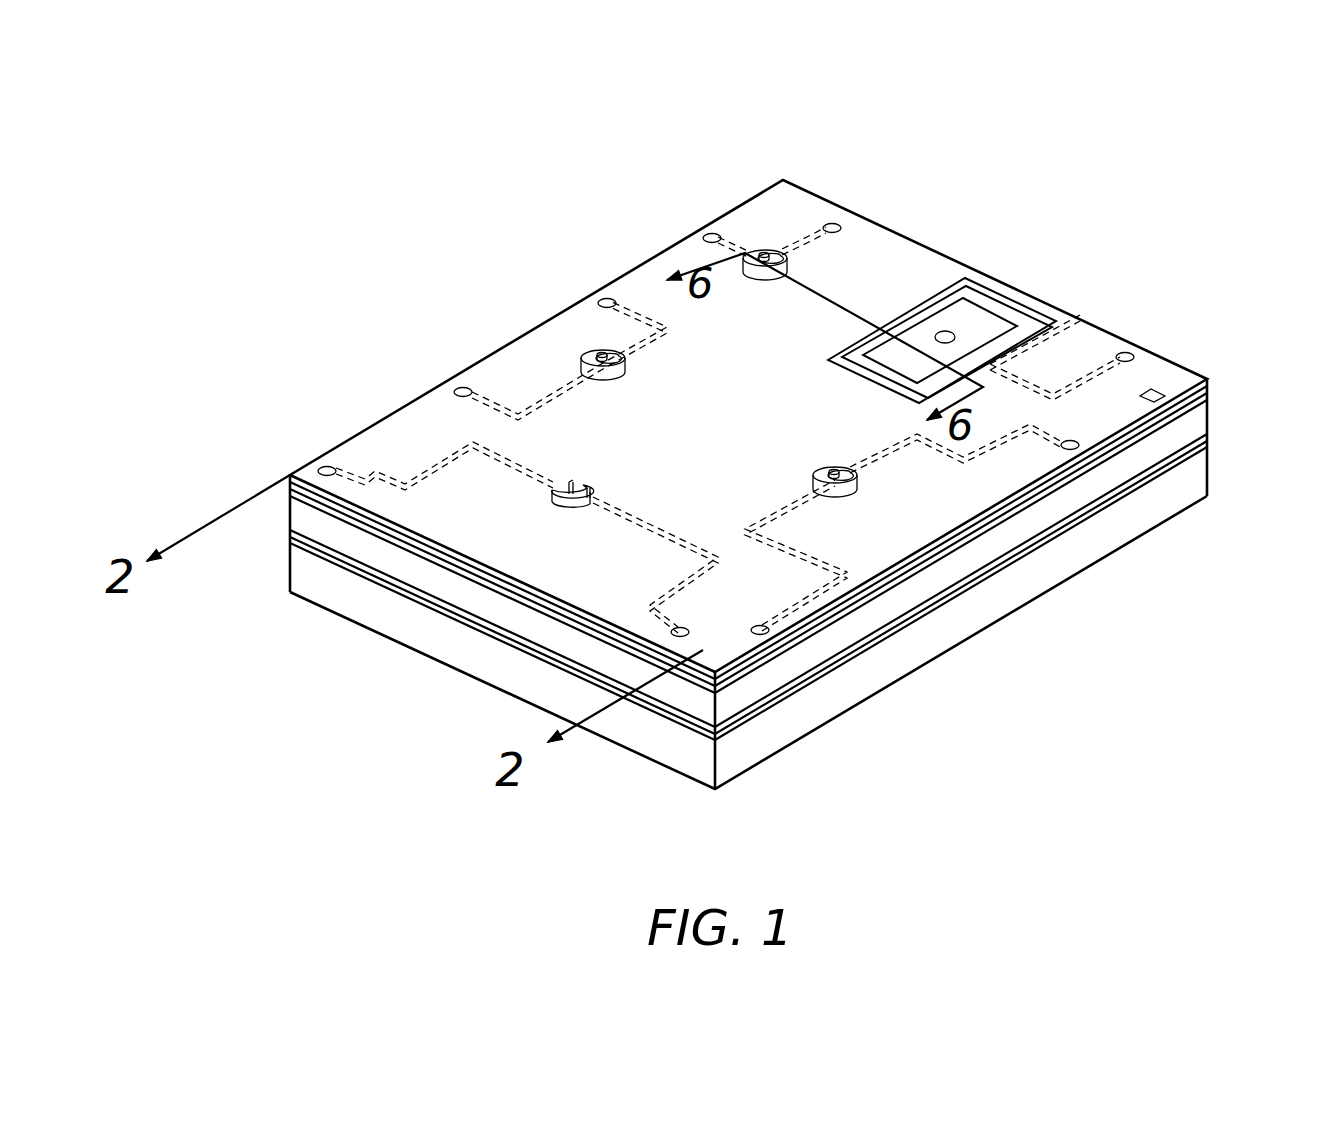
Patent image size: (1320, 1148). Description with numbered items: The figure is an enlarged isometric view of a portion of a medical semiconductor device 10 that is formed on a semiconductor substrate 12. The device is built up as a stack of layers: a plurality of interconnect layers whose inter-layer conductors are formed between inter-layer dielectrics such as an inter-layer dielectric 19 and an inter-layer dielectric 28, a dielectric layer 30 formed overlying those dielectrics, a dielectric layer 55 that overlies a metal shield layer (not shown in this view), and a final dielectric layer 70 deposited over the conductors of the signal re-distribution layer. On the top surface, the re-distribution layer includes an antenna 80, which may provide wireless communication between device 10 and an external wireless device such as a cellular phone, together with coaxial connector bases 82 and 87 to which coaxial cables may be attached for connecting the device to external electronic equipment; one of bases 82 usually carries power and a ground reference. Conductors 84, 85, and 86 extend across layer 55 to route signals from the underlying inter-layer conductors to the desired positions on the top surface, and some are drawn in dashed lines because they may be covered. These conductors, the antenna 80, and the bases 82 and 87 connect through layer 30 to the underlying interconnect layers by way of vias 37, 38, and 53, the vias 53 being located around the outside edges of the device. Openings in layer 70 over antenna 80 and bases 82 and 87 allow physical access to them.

The medical semiconductor device 10 is at (1043, 707).
The semiconductor substrate 12 is at (489, 677).
The inter-layer dielectric 19 is at (298, 543).
The inter-layer dielectric 28 is at (297, 532).
The dielectric layer 30 is at (300, 512).
The via 37 is at (322, 470).
The via 38 is at (688, 630).
The via 53 is at (712, 236).
The dielectric layer 55 is at (297, 485).
The dielectric layer 70 is at (292, 478).
The antenna 80 is at (908, 295).
The coaxial connector base 82 is at (778, 207).
The conductor 84 is at (378, 472).
The conductor 85 is at (645, 614).
The conductor 86 is at (728, 245).
The coaxial connector base 87 is at (548, 514).